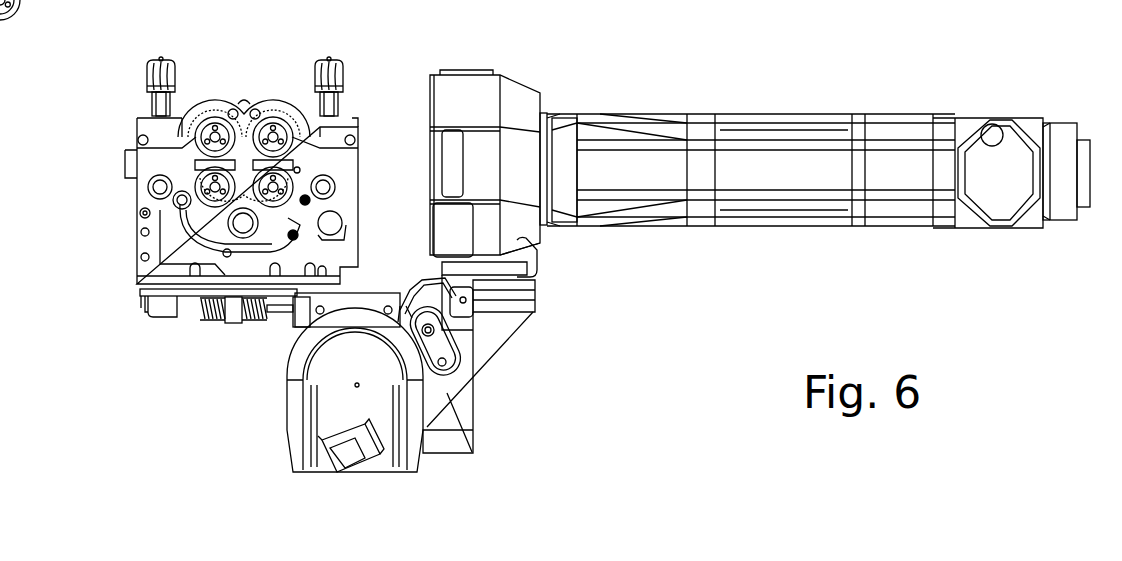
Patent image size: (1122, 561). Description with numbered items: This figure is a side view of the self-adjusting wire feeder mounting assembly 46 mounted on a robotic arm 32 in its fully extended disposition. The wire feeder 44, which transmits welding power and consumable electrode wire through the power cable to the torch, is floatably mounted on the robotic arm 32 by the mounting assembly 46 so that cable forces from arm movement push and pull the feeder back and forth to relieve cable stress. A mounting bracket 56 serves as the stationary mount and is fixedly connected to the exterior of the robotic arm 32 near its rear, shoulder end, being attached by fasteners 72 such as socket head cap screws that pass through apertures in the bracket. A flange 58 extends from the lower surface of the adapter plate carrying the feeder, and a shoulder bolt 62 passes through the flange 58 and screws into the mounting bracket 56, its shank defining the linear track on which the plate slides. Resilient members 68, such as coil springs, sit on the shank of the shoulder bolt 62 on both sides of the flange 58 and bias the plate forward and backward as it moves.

The robotic arm 32 is at (602, 233).
The wire feeder 44 is at (254, 88).
The self-adjusting wire feeder mounting assembly 46 is at (181, 316).
The mounting bracket 56 is at (380, 271).
The flange 58 is at (232, 333).
The shoulder bolt 62 is at (274, 327).
The resilient members 68 is at (206, 332).
The fasteners 72 is at (308, 337).